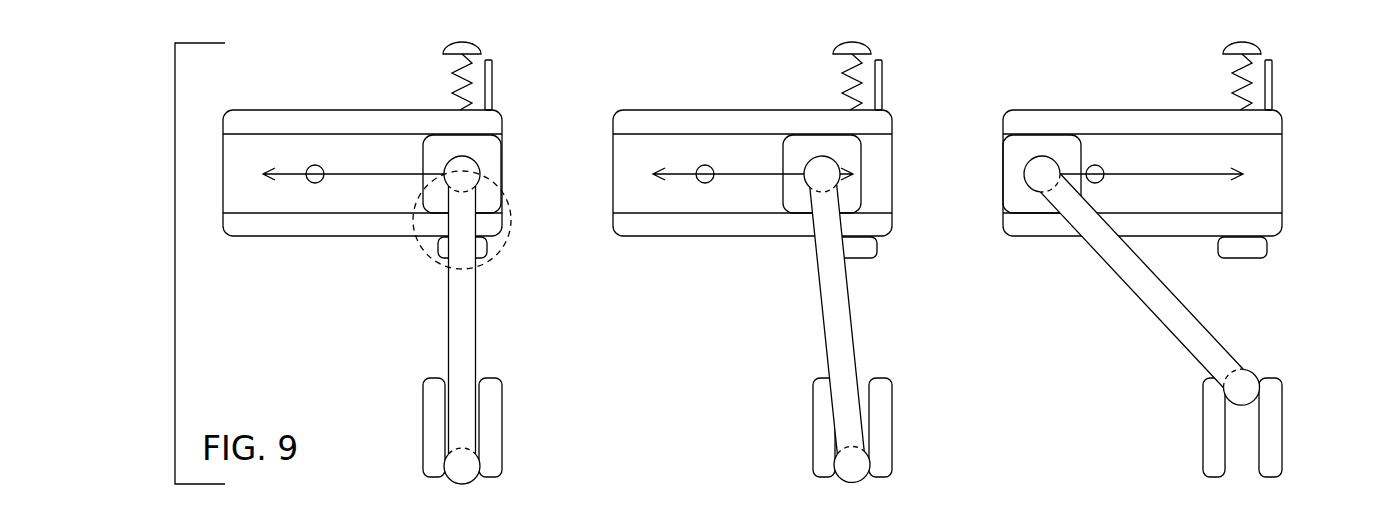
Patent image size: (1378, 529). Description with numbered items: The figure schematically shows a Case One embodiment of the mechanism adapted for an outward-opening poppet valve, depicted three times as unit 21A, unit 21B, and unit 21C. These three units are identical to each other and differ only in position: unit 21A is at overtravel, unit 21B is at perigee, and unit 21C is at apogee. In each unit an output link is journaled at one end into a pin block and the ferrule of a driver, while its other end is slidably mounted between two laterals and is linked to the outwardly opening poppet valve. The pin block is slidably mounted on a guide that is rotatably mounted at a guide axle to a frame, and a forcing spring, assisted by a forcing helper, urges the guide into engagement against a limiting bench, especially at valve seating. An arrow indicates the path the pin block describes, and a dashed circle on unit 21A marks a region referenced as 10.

The FIG. 10 reference region 10 is at (508, 210).
The unit 21A is at (319, 294).
The unit 21B is at (709, 294).
The unit 21C is at (1148, 333).